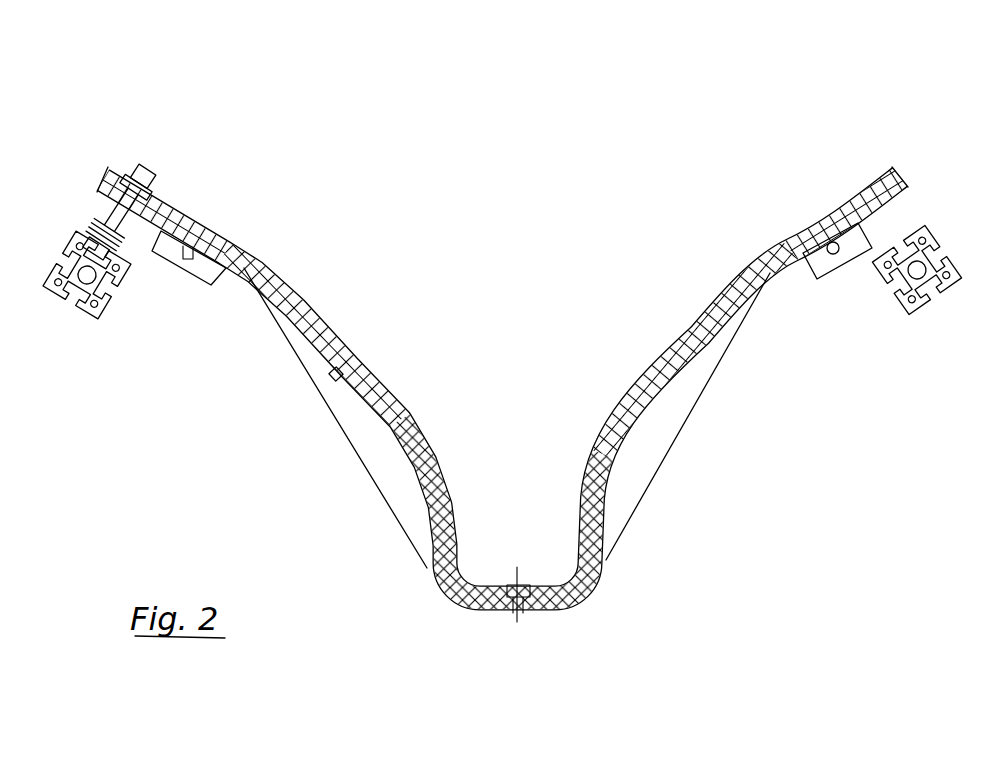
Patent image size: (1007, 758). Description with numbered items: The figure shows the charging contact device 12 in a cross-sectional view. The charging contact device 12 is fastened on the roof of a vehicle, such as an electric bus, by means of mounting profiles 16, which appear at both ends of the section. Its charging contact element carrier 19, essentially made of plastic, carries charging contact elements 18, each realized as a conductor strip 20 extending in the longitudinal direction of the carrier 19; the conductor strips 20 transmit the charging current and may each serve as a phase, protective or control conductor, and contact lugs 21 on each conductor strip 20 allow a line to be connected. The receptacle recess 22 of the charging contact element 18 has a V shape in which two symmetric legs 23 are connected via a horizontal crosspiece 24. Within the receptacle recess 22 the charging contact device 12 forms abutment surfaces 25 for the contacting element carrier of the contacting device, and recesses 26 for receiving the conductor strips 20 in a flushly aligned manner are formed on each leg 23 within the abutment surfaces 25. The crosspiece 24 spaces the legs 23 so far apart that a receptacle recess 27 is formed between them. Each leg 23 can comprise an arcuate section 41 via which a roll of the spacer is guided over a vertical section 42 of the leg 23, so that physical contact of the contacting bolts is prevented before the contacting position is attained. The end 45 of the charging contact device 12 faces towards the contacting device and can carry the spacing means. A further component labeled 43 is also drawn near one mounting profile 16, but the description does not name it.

The charging contact device 12 is at (740, 98).
The mounting profiles 16 is at (97, 312).
The charging contact elements 18 is at (819, 190).
The charging contact element carrier 19 is at (737, 268).
The conductor strips 20 is at (797, 223).
The contact lugs 21 is at (813, 278).
The receptacle recess 22 is at (500, 271).
The legs 23 is at (710, 272).
The crosspiece 24 is at (546, 637).
The abutment surfaces 25 is at (284, 247).
The recesses 26 is at (378, 356).
The receptacle recess 27 is at (538, 551).
The arcuate section 41 is at (446, 430).
The vertical section 42 is at (469, 544).
The clamping bracket 43 is at (178, 186).
The end 45 is at (889, 144).